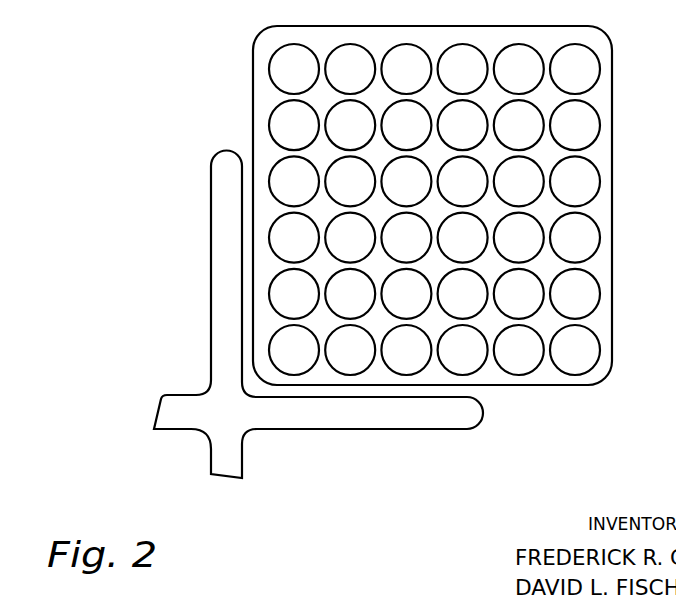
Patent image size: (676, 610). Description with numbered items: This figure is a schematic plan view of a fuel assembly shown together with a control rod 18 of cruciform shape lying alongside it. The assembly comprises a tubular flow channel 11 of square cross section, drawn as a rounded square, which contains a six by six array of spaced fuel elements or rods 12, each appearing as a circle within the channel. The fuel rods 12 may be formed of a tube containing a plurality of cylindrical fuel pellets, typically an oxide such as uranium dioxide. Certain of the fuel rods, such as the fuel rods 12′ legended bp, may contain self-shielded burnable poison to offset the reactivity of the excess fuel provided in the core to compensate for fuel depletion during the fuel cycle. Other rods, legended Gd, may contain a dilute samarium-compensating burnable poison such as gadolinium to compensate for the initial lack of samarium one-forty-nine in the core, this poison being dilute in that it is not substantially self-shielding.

The tubular flow channel 11 is at (614, 356).
The fuel elements or rods 12 is at (270, 62).
The fuel rods containing self-shielded burnable poison 12′ is at (535, 143).
The control rod 18 is at (190, 432).